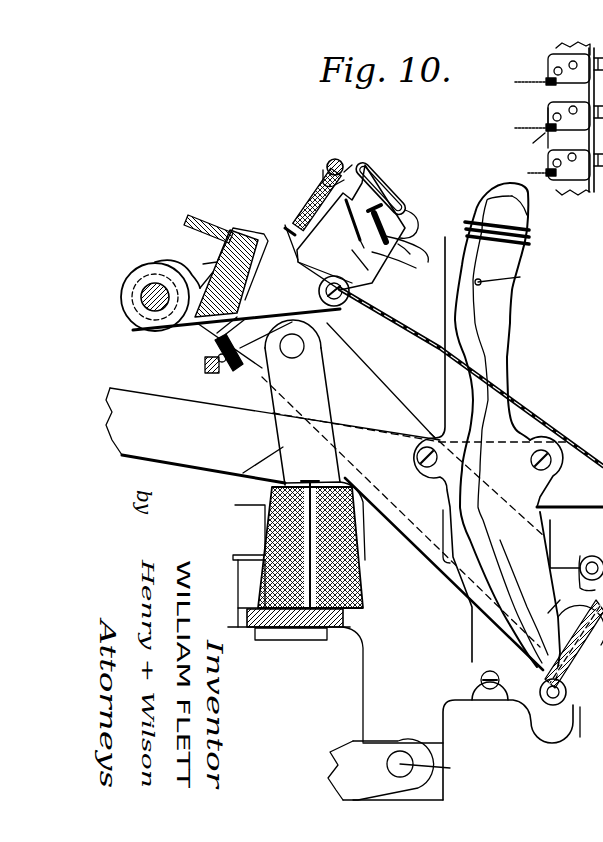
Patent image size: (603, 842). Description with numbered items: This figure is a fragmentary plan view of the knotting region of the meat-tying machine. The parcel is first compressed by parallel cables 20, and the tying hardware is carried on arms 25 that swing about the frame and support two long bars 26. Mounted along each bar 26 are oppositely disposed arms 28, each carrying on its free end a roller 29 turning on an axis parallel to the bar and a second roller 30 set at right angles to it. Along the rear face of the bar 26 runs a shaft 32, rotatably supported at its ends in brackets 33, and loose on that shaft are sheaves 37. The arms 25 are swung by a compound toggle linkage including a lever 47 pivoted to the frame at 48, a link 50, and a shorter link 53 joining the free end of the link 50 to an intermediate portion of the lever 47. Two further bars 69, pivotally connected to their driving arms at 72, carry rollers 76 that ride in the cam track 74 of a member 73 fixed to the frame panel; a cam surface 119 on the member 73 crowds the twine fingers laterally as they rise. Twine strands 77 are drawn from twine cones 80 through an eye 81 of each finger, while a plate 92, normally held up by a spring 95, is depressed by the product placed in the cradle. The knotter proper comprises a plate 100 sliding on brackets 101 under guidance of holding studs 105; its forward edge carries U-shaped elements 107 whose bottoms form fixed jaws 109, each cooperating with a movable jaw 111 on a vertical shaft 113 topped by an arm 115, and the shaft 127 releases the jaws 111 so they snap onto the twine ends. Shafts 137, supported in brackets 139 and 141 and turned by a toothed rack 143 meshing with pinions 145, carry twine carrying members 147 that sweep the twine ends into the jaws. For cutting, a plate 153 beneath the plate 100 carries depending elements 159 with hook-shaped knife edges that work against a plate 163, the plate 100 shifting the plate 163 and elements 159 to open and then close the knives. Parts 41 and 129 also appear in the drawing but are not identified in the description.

The cables 20 is at (527, 413).
The arms 25 is at (414, 483).
The bars 26 is at (222, 253).
The arms 28 is at (293, 233).
The roller 29 is at (350, 298).
The second roller 30 is at (340, 310).
The shaft 32 is at (152, 302).
The brackets 33 is at (165, 266).
The sheaves 37 is at (123, 306).
The bar 41 is at (572, 525).
The lever 47 is at (346, 770).
The frame pivot 48 is at (410, 769).
The link 50 is at (240, 530).
The link 53 is at (232, 477).
The bars 69 is at (563, 47).
The pivot 72 is at (595, 553).
The members 73 is at (517, 312).
The cam track 74 is at (520, 277).
The rollers 76 is at (548, 740).
The twine strands 77 is at (436, 570).
The twine cones 80 is at (366, 614).
The eye 81 is at (548, 173).
The plates 92 is at (596, 447).
The spring 95 is at (575, 616).
The plate 100 is at (297, 232).
The brackets 101 is at (351, 227).
The holding studs 105 is at (302, 200).
The U-shaped elements 107 is at (372, 162).
The fixed twine holding jaw 109 is at (419, 230).
The movable jaw 111 is at (395, 225).
The vertical shaft 113 is at (380, 200).
The arm 115 is at (356, 162).
The cam surface 119 is at (530, 235).
The shaft 127 is at (327, 162).
The washer 129 is at (342, 160).
The shafts 137 is at (244, 366).
The bracket 139 is at (409, 255).
The bracket 141 is at (208, 343).
The toothed rack 143 is at (206, 363).
The pinions 145 is at (221, 364).
The twine carrying member 147 is at (432, 264).
The plate 153 is at (345, 224).
The elements 159 is at (440, 210).
The plate 163 is at (373, 272).